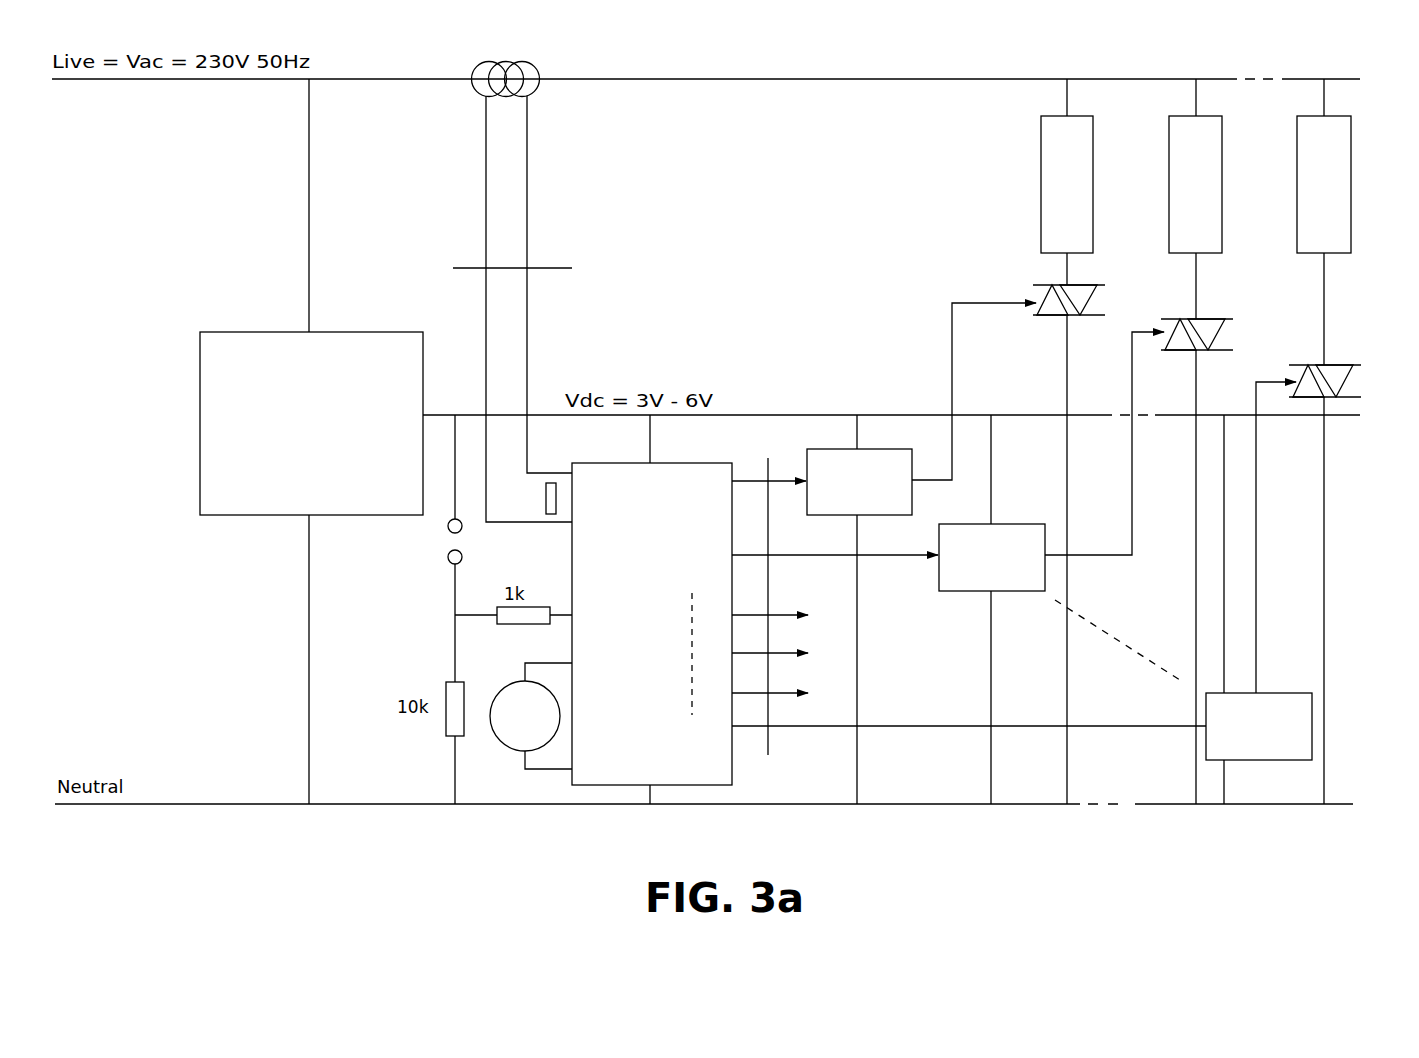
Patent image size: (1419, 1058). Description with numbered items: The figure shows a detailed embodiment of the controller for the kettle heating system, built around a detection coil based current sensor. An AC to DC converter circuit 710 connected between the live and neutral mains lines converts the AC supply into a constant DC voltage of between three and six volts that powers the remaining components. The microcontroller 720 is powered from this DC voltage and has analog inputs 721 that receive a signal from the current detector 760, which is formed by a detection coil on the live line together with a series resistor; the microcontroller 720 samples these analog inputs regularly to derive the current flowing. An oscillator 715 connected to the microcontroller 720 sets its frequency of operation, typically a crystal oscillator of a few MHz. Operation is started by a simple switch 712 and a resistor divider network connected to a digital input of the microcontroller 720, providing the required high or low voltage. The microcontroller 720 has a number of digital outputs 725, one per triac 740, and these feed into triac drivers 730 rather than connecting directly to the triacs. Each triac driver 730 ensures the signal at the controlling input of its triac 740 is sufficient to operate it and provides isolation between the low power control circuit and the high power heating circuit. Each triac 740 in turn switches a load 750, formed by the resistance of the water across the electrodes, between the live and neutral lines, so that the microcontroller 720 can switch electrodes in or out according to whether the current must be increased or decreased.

The AC to DC converter circuit 710 is at (311, 423).
The switch 712 is at (462, 541).
The oscillator 715 is at (518, 740).
The microcontroller 720 is at (602, 786).
The analog inputs 721 is at (535, 268).
The digital outputs 725 is at (767, 620).
The triac driver 730 is at (1059, 553).
The triac 740 is at (1218, 528).
The load 750 is at (1173, 166).
The current detector 760 is at (522, 276).